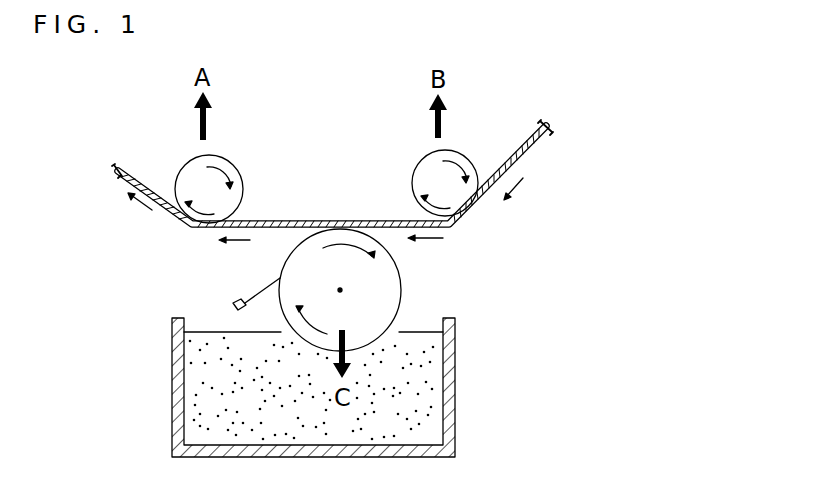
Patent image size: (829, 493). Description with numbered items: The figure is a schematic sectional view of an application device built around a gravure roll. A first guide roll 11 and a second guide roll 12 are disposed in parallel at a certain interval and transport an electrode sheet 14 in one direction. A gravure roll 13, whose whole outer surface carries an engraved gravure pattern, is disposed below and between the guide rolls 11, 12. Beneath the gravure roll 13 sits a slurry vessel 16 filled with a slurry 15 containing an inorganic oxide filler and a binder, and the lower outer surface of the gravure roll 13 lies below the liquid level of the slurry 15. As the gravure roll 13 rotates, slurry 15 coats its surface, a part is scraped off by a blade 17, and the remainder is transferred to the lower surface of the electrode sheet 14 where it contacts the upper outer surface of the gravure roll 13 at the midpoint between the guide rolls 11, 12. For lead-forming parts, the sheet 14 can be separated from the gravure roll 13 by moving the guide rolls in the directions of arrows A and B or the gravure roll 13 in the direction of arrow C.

The first guide roll 11 is at (229, 170).
The second guide roll 12 is at (462, 164).
The gravure roll 13 is at (386, 295).
The electrode sheet 14 is at (520, 168).
The slurry 15 is at (424, 405).
The slurry vessel 16 is at (456, 334).
The blade 17 is at (235, 306).